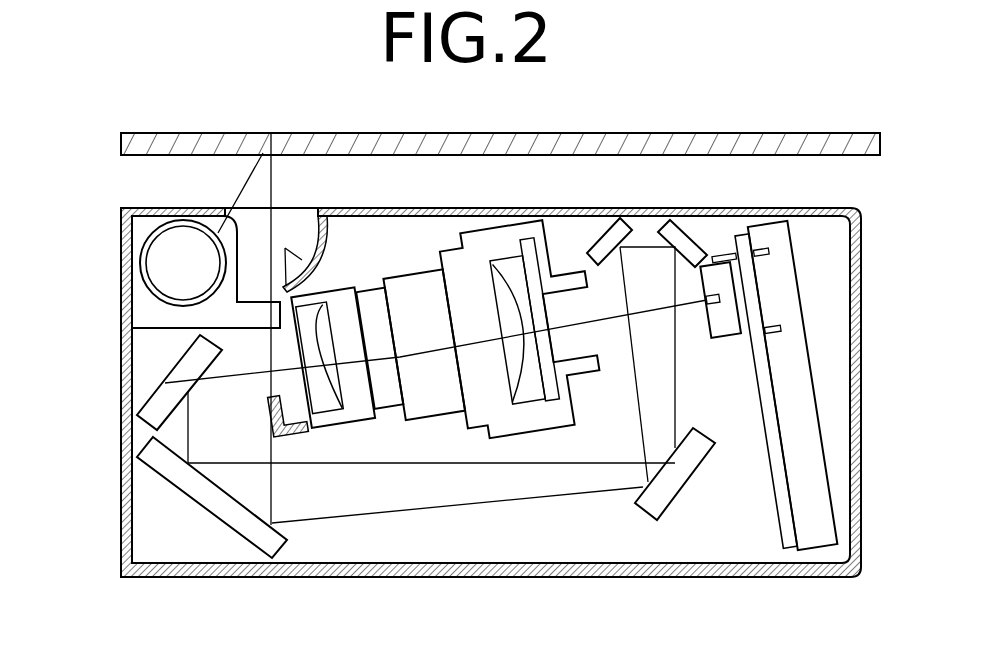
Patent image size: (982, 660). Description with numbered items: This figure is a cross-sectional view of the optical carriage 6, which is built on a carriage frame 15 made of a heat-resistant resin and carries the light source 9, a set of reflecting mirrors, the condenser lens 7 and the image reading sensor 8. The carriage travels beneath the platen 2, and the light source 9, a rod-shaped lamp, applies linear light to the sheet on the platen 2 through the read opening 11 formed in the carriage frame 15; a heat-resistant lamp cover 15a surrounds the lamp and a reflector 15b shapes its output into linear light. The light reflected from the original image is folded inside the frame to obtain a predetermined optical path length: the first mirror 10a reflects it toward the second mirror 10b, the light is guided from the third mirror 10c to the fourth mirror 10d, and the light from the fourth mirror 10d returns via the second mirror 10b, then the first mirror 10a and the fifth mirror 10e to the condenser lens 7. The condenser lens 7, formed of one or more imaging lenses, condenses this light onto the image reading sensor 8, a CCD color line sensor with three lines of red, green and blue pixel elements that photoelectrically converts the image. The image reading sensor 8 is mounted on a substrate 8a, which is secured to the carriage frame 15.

The platen 2 is at (724, 141).
The optical carriage 6 is at (451, 396).
The condenser lens 7 is at (478, 255).
The image reading sensor 8 is at (717, 268).
The substrate 8a is at (762, 245).
The light source 9 is at (170, 270).
The first mirror 10a is at (183, 477).
The second mirror 10b is at (664, 495).
The third mirror 10c is at (603, 238).
The fourth mirror 10d is at (692, 240).
The fifth mirror 10e is at (167, 382).
The read opening 11 is at (280, 235).
The carriage frame 15 is at (121, 358).
The heat-resistant lamp cover 15a is at (121, 237).
The reflector 15b is at (320, 246).